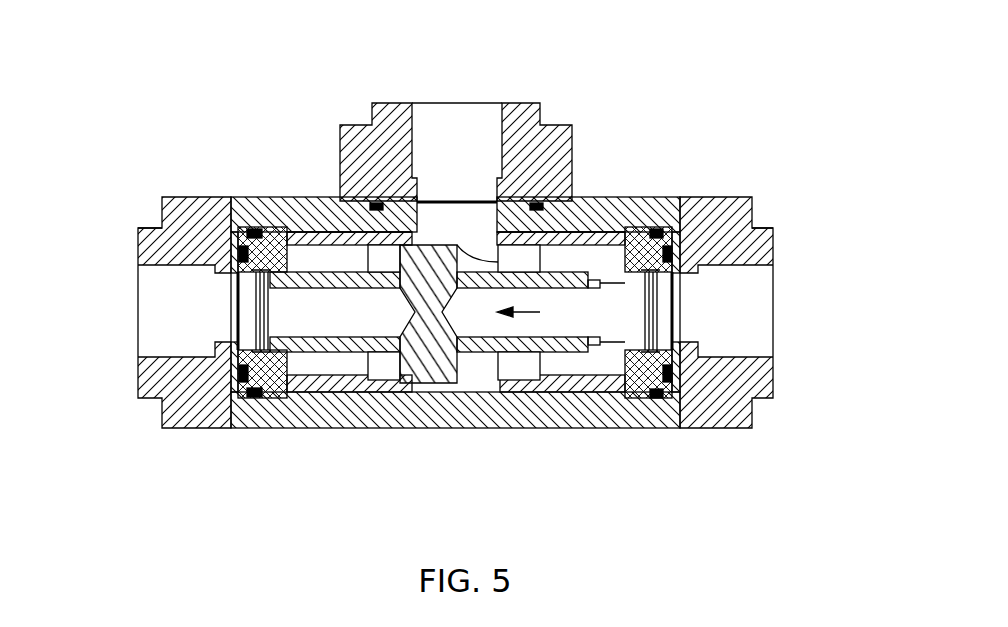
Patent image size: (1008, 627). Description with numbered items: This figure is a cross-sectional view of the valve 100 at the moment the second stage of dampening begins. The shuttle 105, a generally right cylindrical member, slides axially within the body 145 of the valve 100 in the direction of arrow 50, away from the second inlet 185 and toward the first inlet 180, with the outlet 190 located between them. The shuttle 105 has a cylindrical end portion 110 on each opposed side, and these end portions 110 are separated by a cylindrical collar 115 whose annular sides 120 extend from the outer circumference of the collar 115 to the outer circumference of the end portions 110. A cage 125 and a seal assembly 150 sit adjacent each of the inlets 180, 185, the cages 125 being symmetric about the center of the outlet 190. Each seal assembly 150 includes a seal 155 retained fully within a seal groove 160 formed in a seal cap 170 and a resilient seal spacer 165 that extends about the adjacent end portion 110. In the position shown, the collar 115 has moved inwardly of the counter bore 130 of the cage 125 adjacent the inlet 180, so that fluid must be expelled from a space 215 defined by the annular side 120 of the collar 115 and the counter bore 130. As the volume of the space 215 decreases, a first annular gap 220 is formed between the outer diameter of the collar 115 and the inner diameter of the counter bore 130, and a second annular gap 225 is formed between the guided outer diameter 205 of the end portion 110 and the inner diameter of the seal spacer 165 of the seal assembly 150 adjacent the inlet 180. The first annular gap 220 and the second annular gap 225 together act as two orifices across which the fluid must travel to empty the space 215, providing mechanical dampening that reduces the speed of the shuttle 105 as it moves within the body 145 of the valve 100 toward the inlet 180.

The valve 100 is at (759, 19).
The shuttle 105 is at (413, 412).
The end portion 110 is at (303, 354).
The collar 115 is at (450, 385).
The annular side 120 is at (410, 183).
The cage 125 is at (352, 388).
The counter bore 130 is at (380, 380).
The body 145 is at (255, 400).
The seal assembly 150 is at (235, 232).
The seal 155 is at (255, 276).
The seal groove 160 is at (257, 347).
The seal spacer 165 is at (262, 398).
The seal cap 170 is at (160, 214).
The first inlet 180 is at (153, 270).
The second inlet 185 is at (755, 268).
The outlet 190 is at (500, 102).
The guided outer diameter 205 is at (370, 206).
The space 215 is at (342, 238).
The first annular gap 220 is at (435, 140).
The second annular gap 225 is at (262, 262).
The arrow 50 is at (540, 312).